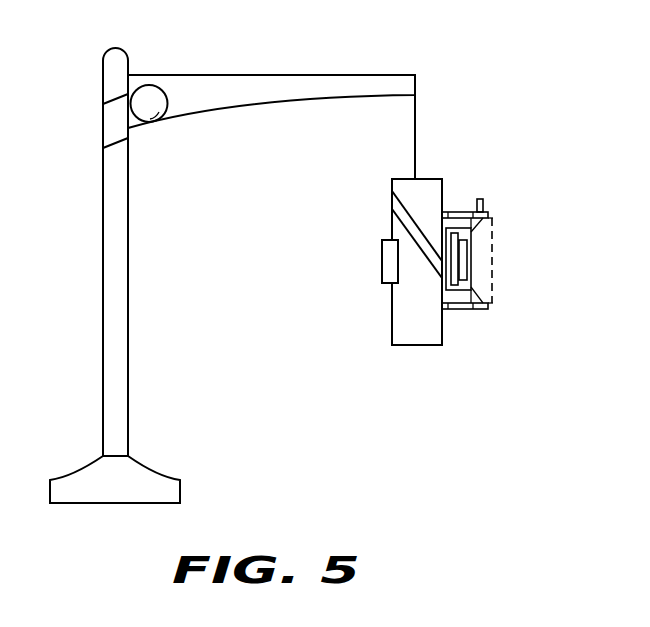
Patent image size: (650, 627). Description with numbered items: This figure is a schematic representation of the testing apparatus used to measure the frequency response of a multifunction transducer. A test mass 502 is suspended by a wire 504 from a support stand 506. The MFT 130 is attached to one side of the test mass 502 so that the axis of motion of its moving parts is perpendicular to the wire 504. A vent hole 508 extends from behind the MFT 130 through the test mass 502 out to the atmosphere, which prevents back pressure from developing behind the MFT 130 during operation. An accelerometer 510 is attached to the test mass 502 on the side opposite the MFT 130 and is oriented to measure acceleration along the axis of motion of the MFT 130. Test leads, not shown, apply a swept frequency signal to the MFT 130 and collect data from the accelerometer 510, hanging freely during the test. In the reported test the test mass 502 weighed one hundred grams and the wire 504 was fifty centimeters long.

The MFT 130 is at (496, 251).
The test mass 502 is at (392, 322).
The wire 504 is at (415, 98).
The support stand 506 is at (281, 75).
The vent hole 508 is at (392, 204).
The accelerometer 510 is at (381, 263).